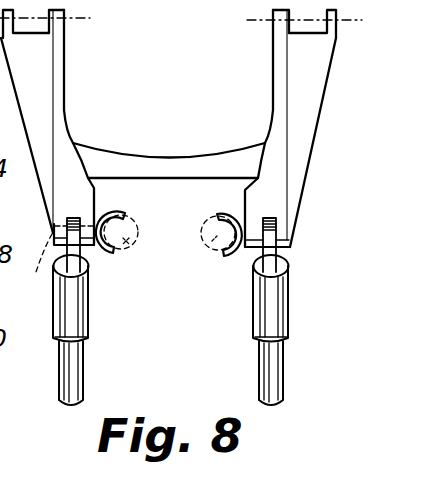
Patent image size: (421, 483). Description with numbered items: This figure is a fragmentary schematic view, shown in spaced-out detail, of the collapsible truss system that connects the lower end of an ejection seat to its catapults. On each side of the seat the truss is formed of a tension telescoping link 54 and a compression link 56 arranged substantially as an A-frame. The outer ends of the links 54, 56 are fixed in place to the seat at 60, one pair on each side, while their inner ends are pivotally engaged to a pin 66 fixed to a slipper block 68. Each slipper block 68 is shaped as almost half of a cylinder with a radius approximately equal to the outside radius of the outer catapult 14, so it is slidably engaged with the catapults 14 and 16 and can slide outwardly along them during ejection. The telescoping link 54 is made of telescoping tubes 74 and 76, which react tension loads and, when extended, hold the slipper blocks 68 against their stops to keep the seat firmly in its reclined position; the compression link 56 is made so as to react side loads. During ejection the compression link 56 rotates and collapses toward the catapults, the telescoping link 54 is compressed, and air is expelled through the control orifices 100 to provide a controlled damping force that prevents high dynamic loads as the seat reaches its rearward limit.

The outer catapult 14 is at (128, 250).
The catapult 16 is at (212, 249).
The tension telescoping link 54 is at (186, 330).
The compression link 56 is at (38, 98).
The fixed outer end 60 is at (72, 18).
The pin 66 is at (318, 228).
The slipper block 68 is at (112, 211).
The telescoping tube 74 is at (73, 321).
The telescoping tube 76 is at (77, 375).
The control orifice 100 is at (78, 272).